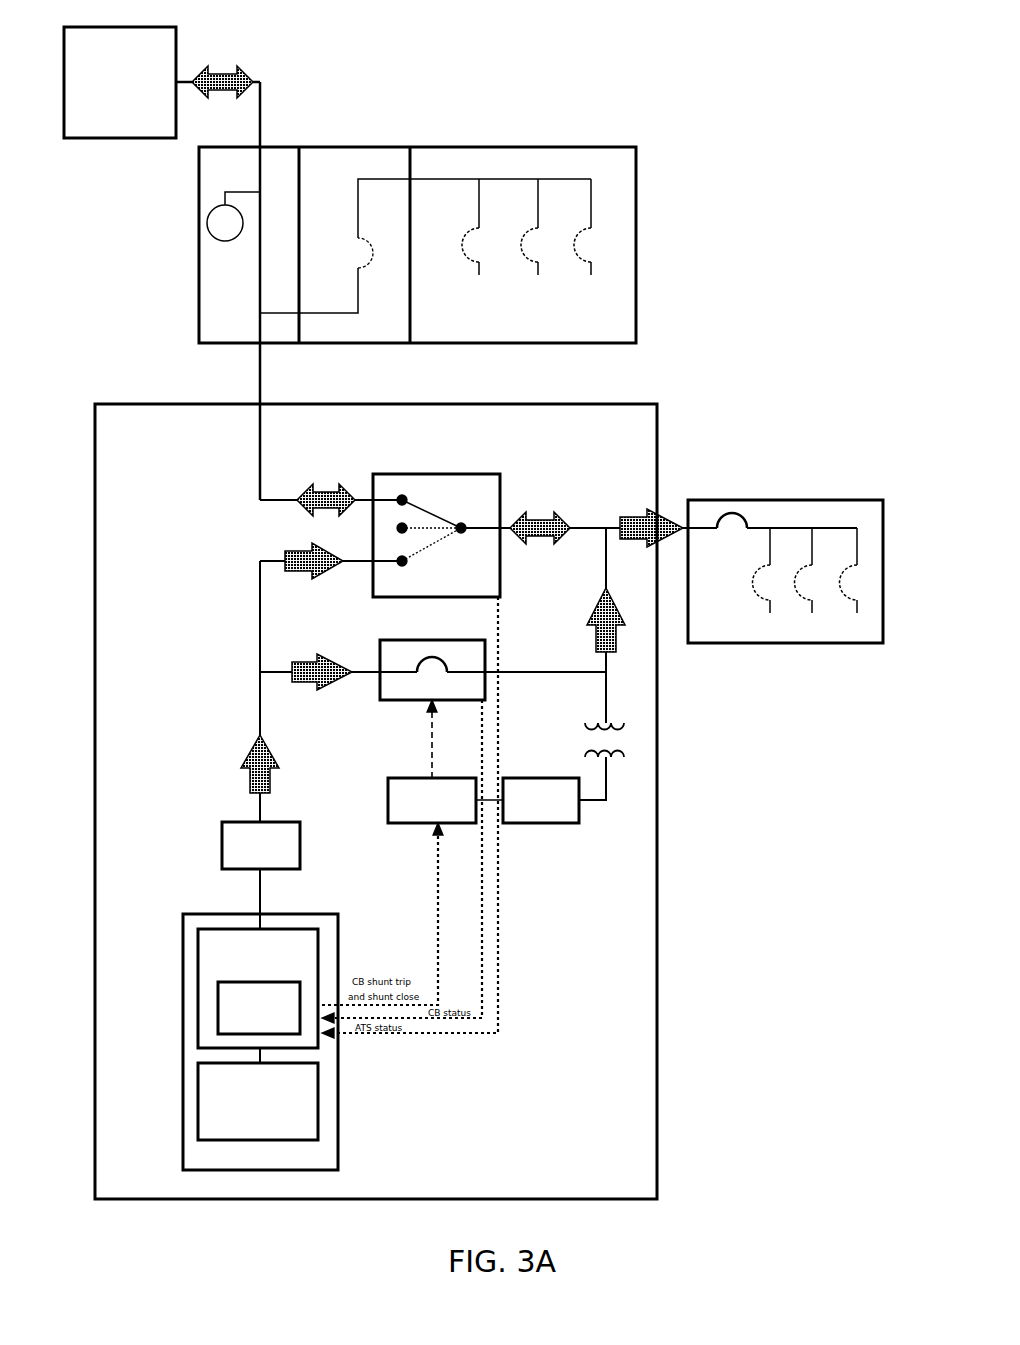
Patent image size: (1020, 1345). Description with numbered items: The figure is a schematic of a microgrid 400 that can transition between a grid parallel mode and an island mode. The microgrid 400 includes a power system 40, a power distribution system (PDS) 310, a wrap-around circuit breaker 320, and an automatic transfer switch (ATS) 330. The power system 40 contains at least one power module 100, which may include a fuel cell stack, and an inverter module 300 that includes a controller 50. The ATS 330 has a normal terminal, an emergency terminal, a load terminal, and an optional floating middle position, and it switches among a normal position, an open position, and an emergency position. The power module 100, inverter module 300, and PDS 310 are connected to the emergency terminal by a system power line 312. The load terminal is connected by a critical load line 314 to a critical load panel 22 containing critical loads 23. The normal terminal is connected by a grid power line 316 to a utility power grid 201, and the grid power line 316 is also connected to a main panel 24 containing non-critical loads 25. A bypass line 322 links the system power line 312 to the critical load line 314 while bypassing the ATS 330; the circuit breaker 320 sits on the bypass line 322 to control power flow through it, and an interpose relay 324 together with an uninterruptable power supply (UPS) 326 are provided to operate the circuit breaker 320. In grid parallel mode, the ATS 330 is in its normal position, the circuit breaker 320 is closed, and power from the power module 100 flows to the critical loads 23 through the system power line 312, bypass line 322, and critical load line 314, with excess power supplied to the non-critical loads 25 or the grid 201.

The utility power grid 201 is at (150, 97).
The main panel 24 is at (620, 147).
The non-critical loads 25 is at (592, 303).
The critical load panel 22 is at (838, 647).
The critical loads 23 is at (763, 633).
The grid power line 316 is at (279, 500).
The automatic transfer switch 330 is at (488, 473).
The critical load line 314 is at (572, 527).
The bypass line 322 is at (560, 670).
The system power line 312 is at (257, 704).
The circuit breaker 320 is at (380, 702).
The power distribution system 310 is at (222, 837).
The interpose relay 324 is at (405, 824).
The uninterruptable power supply 326 is at (547, 824).
The inverter module 300 is at (285, 968).
The controller 50 is at (275, 1020).
The power module 100 is at (287, 1117).
The power system 40 is at (278, 1165).
The microgrid 400 is at (507, 1132).